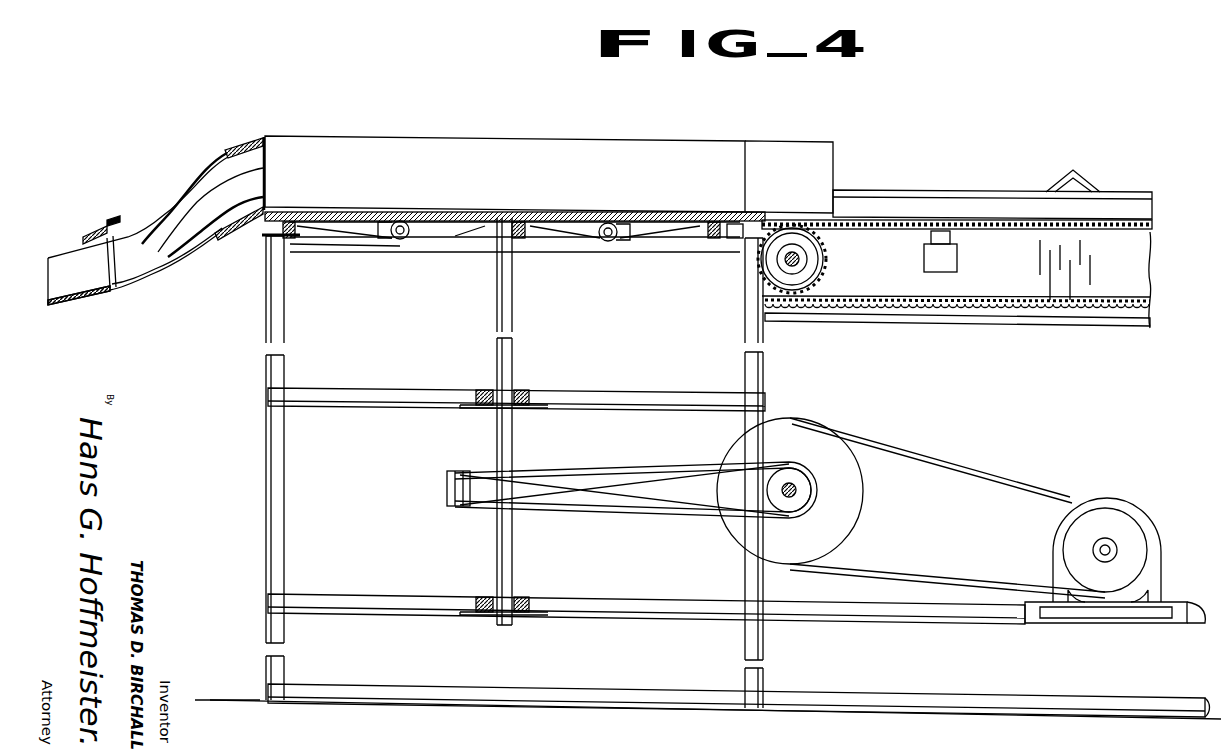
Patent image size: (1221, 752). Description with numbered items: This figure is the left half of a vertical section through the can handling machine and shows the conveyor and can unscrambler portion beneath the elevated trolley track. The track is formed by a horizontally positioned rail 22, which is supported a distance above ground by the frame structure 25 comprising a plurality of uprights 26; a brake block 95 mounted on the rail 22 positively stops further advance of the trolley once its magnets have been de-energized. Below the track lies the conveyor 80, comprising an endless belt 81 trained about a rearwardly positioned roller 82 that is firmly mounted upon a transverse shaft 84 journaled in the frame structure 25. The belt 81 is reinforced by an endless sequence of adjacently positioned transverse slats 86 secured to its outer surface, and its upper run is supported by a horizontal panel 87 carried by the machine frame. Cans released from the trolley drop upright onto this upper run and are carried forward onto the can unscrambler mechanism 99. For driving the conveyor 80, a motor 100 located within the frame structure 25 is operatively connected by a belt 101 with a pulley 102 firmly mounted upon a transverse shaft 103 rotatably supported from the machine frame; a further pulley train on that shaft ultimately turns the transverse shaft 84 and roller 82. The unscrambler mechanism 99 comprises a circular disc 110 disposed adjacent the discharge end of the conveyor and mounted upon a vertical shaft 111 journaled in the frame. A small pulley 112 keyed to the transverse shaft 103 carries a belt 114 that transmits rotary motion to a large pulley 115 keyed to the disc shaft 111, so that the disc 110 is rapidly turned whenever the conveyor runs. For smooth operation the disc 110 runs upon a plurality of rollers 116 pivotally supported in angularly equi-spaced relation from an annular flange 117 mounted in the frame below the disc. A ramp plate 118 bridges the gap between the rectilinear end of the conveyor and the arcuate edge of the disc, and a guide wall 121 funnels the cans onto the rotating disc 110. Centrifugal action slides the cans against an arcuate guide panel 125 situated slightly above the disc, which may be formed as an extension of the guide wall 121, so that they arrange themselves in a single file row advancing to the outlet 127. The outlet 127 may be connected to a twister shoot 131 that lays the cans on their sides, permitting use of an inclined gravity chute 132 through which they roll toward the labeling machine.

The rail 22 is at (1123, 194).
The frame structure 25 is at (398, 250).
The uprights 26 is at (286, 301).
The conveyor 80 is at (1043, 233).
The endless belt 81 is at (1152, 300).
The rearward roller 82 is at (760, 268).
The transverse shaft 84 is at (778, 264).
The transverse slats 86 is at (1082, 222).
The horizontal panel 87 is at (896, 230).
The brake block 95 is at (1087, 182).
The can unscrambler mechanism 99 is at (510, 158).
The motor 100 is at (1090, 522).
The belt 101 is at (973, 568).
The pulley 102 is at (852, 478).
The transverse shaft 103 is at (800, 492).
The circular disc 110 is at (622, 222).
The vertical shaft 111 is at (508, 302).
The small pulley 112 is at (798, 502).
The belt 114 is at (632, 481).
The large pulley 115 is at (538, 474).
The rollers 116 is at (297, 232).
The annular flange 117 is at (265, 240).
The ramp plate 118 is at (748, 221).
The right hand guide wall 121 is at (822, 158).
The arcuate guide panel 125 is at (422, 176).
The outlet 127 is at (272, 145).
The twister shoot 131 is at (147, 263).
The inclined gravity chute 132 is at (83, 293).